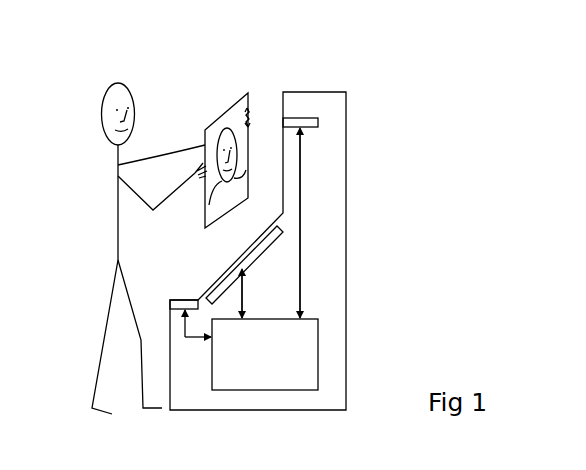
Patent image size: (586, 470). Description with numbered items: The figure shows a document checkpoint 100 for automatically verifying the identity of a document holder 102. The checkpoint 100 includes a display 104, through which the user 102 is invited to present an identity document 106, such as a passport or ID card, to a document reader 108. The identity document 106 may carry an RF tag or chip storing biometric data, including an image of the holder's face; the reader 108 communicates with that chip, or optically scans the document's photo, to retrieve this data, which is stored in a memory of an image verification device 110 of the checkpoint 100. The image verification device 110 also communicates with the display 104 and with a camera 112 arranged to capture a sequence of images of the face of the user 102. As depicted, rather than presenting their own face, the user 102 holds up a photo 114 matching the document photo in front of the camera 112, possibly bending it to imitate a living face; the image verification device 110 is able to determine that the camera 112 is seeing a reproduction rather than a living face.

The document checkpoint 100 is at (335, 133).
The document holder 102 is at (143, 88).
The display 104 is at (243, 264).
The identity document 106 is at (177, 298).
The document reader 108 is at (181, 316).
The image verification device 110 is at (282, 364).
The camera 112 is at (302, 117).
The photo 114 is at (235, 111).